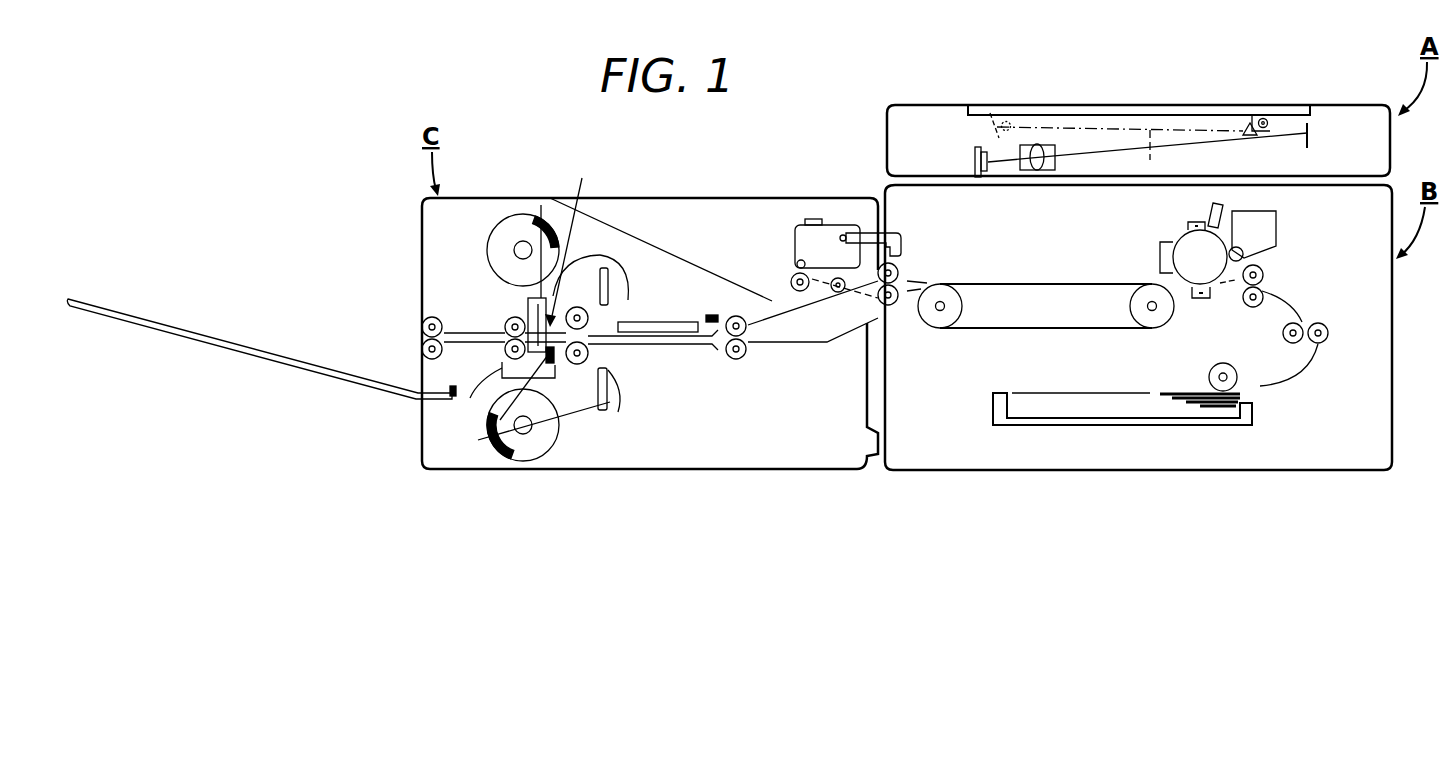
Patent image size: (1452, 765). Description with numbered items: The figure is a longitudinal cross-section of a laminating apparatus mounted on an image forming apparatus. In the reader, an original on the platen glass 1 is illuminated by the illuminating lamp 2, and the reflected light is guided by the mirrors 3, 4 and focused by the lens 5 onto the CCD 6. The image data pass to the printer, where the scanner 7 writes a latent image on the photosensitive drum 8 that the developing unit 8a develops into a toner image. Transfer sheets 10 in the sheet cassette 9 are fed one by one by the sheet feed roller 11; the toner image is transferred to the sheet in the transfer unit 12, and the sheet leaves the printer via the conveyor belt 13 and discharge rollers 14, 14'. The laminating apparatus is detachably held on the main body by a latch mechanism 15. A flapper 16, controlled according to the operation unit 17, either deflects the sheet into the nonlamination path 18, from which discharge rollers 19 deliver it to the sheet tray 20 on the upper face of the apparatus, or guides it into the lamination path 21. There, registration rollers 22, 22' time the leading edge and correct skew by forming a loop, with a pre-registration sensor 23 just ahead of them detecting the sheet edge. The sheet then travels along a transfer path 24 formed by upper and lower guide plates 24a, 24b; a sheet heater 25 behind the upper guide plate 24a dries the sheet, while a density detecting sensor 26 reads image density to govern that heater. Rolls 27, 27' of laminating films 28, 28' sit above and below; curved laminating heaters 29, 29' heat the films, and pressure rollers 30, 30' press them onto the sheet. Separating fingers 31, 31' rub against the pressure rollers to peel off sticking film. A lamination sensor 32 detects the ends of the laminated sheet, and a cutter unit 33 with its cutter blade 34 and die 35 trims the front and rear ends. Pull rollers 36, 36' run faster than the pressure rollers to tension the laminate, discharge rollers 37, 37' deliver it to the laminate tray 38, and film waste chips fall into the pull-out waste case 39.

The platen glass 1 is at (1215, 108).
The illuminating lamp 2 is at (1267, 117).
The mirror 3 is at (1243, 134).
The mirror 4 is at (1307, 143).
The lens 5 is at (1050, 170).
The CCD 6 is at (975, 156).
The scanner 7 is at (1230, 203).
The photosensitive drum 8 is at (1187, 244).
The developing unit 8a is at (1278, 226).
The sheet cassette 9 is at (1088, 426).
The transfer sheet 10 is at (1140, 393).
The sheet feed roller 11 is at (1232, 366).
The transfer unit 12 is at (1192, 287).
The conveyor belt 13 is at (1096, 284).
The discharge roller 14 is at (918, 262).
The discharge roller 14' is at (903, 329).
The latch mechanism 15 is at (852, 232).
The flapper 16 is at (850, 300).
The operation unit 17 is at (805, 222).
The nonlamination path 18 is at (826, 270).
The discharge rollers 19 is at (795, 272).
The sheet tray 20 is at (683, 262).
The lamination path 21 is at (806, 344).
The registration roller 22 is at (730, 269).
The registration roller 22' is at (750, 384).
The pre-registration sensor 23 is at (751, 318).
The transfer path 24 is at (677, 346).
The upper guide plate 24a is at (700, 346).
The lower guide plate 24b is at (662, 346).
The sheet heater 25 is at (672, 320).
The density detecting sensor 26 is at (710, 314).
The roll 27 is at (523, 214).
The roll 27' is at (544, 451).
The laminating film 28 is at (591, 239).
The laminating film 28' is at (579, 484).
The laminating heater 29 is at (629, 254).
The laminating heater 29' is at (616, 415).
The pressure roller 30 is at (608, 302).
The pressure roller 30' is at (610, 360).
The separating finger 31 is at (586, 286).
The separating finger 31' is at (584, 389).
The lamination sensor 32 is at (569, 240).
The cutter unit 33 is at (545, 206).
The cutter blade 34 is at (527, 302).
The die 35 is at (502, 458).
The pull roller 36 is at (505, 319).
The pull roller 36' is at (505, 355).
The discharge roller 37 is at (391, 314).
The discharge roller 37' is at (396, 350).
The laminate tray 38 is at (224, 330).
The waste case 39 is at (476, 381).